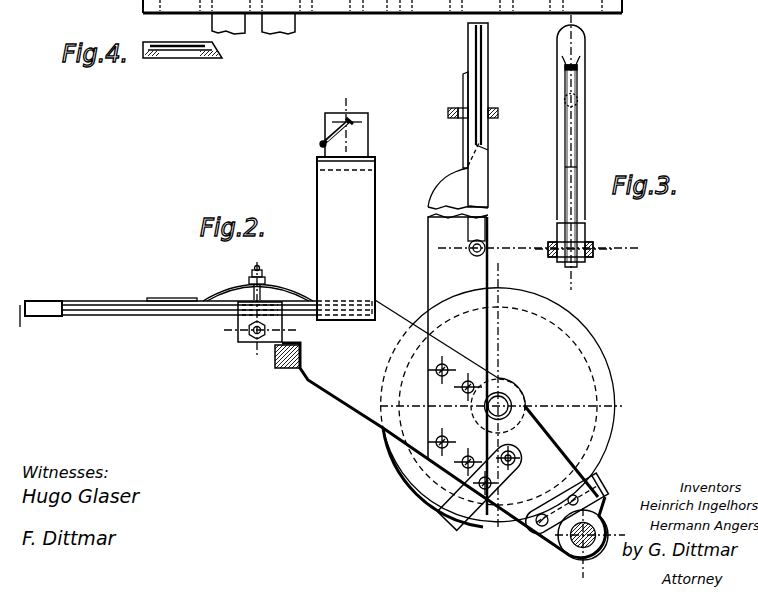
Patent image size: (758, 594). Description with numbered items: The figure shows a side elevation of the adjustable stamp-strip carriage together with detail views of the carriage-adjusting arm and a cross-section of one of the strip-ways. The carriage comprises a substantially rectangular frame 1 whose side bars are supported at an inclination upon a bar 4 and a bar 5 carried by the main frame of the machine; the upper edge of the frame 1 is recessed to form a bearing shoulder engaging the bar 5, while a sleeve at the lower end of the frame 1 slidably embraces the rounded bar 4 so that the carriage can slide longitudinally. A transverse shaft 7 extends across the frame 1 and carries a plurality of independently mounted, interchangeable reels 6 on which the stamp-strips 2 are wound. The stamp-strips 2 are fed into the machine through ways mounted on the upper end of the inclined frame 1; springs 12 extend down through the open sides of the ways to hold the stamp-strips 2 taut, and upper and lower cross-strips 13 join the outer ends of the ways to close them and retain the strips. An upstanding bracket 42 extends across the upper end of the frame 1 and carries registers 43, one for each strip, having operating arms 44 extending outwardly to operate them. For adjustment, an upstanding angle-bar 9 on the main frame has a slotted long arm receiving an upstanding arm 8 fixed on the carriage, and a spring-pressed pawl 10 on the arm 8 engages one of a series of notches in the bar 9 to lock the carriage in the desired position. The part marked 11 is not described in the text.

In FIG. 2, the frame 1 is at (443, 429).
In FIG. 2, the stamp-strips 2 is at (212, 22).
In FIG. 2, the bar 4 is at (600, 530).
In FIG. 2, the bar 5 is at (275, 353).
In FIG. 2, the reels 6 is at (587, 346).
In FIG. 2, the transverse shaft 7 is at (508, 400).
In FIG. 2, the upstanding arm 8 is at (481, 191).
In FIG. 3, the upstanding arm 8 is at (580, 53).
In FIG. 2, the angle-bar 9 is at (490, 114).
In FIG. 2, the spring-pressed pawl 10 is at (462, 80).
In FIG. 3, the spring-pressed pawl 10 is at (576, 138).
In FIG. 2, the lever 11 is at (443, 525).
In FIG. 2, the springs 12 is at (274, 298).
In FIG. 2, the cross-strips 13 is at (55, 302).
In FIG. 4, the cross-strips 13 is at (182, 58).
In FIG. 2, the upstanding bracket 42 is at (346, 238).
In FIG. 2, the registers 43 is at (352, 141).
In FIG. 2, the operating arms 44 is at (321, 142).